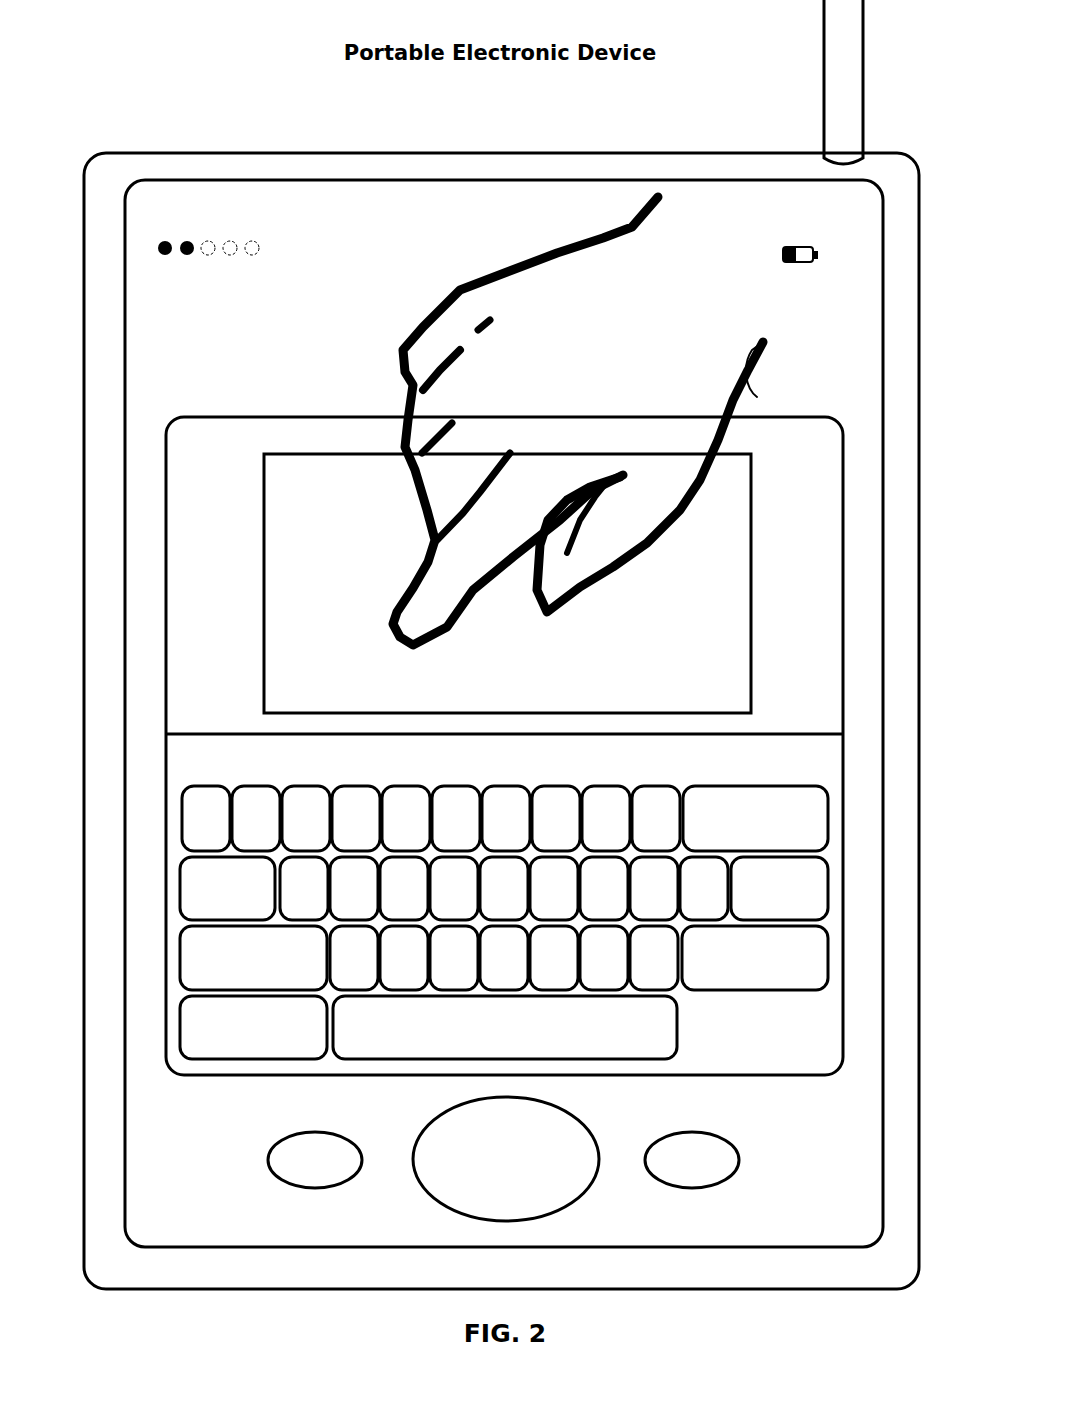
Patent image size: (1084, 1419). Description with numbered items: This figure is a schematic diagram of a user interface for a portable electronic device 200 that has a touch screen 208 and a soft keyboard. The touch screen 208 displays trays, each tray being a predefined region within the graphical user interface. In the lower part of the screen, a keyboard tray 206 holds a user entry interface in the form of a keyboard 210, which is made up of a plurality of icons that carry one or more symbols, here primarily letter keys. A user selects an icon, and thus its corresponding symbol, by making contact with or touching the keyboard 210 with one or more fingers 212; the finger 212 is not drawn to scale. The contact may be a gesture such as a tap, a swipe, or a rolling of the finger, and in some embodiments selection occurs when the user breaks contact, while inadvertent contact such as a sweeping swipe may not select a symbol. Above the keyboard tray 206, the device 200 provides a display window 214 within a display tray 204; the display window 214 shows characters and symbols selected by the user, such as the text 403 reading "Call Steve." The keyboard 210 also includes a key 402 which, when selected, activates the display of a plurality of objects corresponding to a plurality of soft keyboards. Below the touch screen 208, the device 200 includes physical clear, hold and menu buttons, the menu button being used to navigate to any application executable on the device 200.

The portable electronic device 200 is at (750, 104).
The display tray 204 is at (776, 466).
The keyboard tray 206 is at (764, 772).
The touch screen 208 is at (181, 370).
The keyboard 210 is at (258, 767).
The finger 212 is at (760, 392).
The display window 214 is at (701, 701).
The key 402 is at (272, 1060).
The text 403 is at (361, 526).